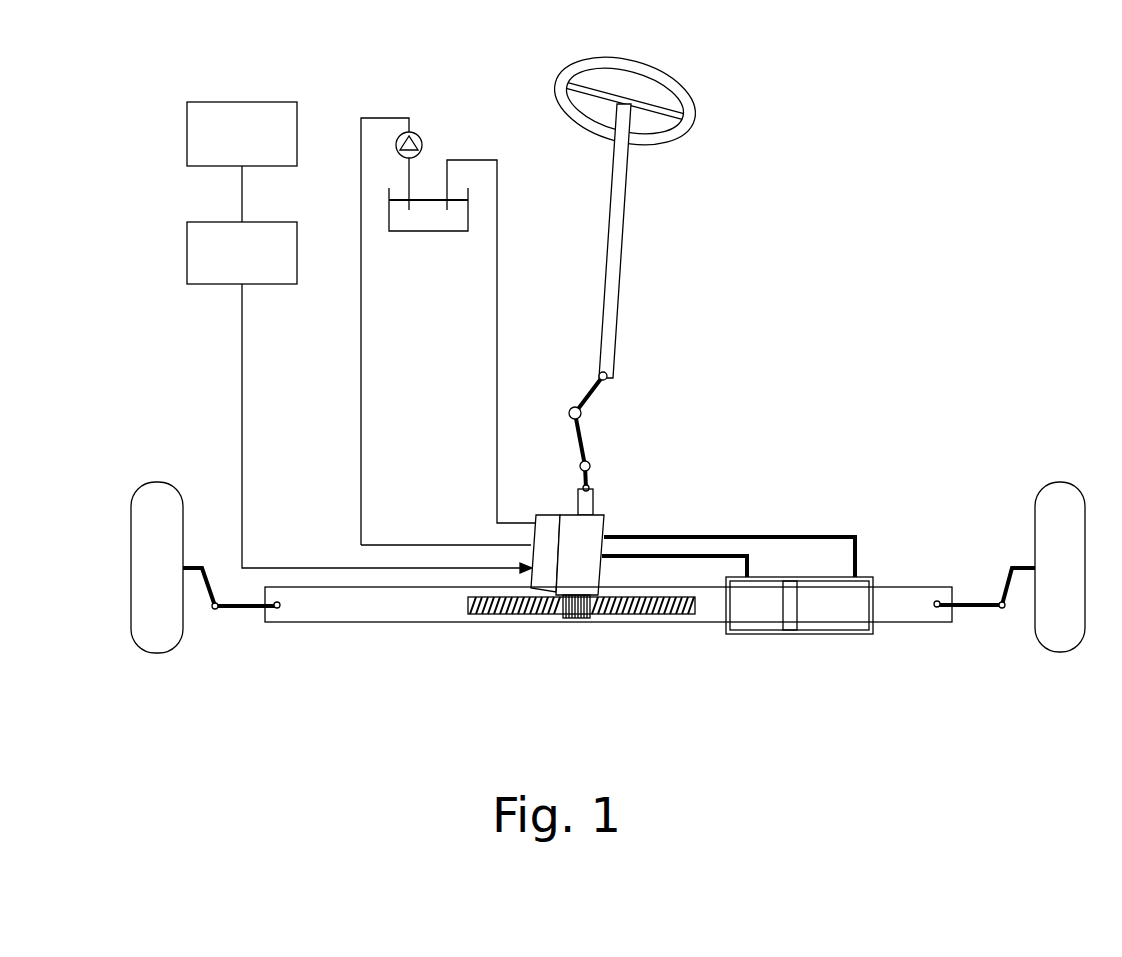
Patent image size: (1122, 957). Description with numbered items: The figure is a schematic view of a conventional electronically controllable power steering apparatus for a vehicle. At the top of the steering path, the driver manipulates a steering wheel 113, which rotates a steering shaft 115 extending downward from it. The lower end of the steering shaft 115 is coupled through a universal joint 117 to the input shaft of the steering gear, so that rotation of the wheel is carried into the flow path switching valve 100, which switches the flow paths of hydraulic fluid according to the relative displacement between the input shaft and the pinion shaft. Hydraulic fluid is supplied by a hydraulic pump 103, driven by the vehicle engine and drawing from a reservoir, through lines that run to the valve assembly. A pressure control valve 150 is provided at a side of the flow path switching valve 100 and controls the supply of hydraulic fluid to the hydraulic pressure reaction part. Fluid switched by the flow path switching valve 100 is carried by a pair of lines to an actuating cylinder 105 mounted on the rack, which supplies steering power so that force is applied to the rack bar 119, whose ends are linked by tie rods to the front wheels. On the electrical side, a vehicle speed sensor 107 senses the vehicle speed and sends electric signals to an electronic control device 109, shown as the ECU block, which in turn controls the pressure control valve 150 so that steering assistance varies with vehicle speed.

The flow path switching valve 100 is at (597, 530).
The hydraulic pump 103 is at (422, 141).
The actuating cylinder 105 is at (838, 625).
The vehicle speed sensor 107 is at (243, 106).
The electronic control device 109 is at (193, 252).
The steering wheel 113 is at (678, 72).
The steering shaft 115 is at (624, 214).
The universal joint 117 is at (582, 414).
The rack bar 119 is at (340, 612).
The pressure control valve 150 is at (548, 527).